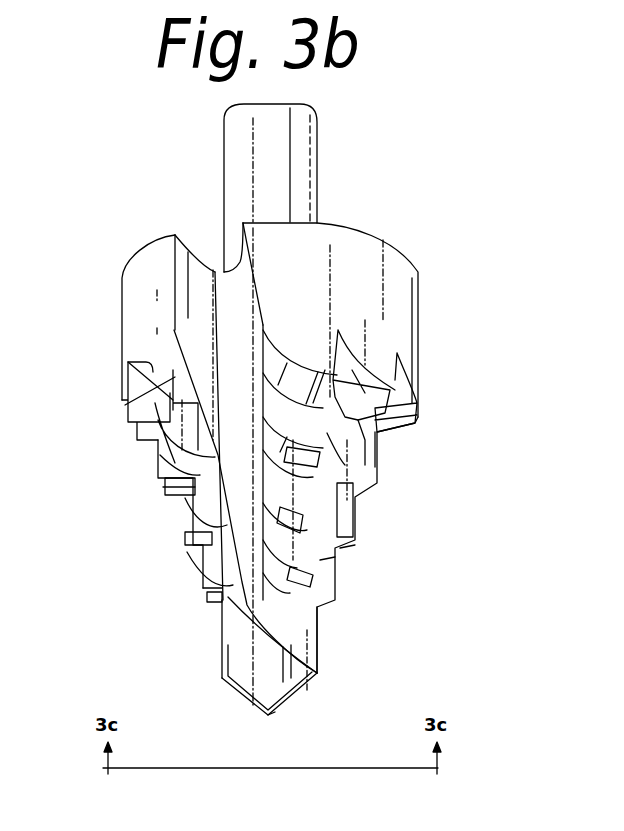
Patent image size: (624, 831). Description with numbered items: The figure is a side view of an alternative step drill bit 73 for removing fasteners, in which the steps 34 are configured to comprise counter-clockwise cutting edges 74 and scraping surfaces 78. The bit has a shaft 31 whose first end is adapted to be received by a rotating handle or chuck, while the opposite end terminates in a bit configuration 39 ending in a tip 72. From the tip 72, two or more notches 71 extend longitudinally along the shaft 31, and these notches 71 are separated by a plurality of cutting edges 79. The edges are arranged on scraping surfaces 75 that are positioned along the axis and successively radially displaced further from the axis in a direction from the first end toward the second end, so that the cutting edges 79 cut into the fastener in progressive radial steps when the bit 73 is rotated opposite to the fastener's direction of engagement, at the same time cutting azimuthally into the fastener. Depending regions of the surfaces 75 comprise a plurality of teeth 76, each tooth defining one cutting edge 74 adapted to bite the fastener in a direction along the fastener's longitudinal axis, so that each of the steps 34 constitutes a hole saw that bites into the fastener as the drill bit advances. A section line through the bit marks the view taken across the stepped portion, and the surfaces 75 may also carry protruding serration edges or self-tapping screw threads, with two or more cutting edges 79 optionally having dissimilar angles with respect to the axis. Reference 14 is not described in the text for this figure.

The drill tip 14 is at (233, 678).
The shaft 31 is at (302, 172).
The steps 34 is at (418, 388).
The bit configuration 39 is at (287, 700).
The notches 71 is at (203, 288).
The tip 72 is at (297, 637).
The alternative step drill bit 73 is at (422, 540).
The cutting edges 74 is at (153, 365).
The scraping surfaces 75 is at (186, 386).
The teeth 76 is at (343, 570).
The scraping surfaces 78 is at (358, 377).
The cutting edges 79 is at (163, 437).